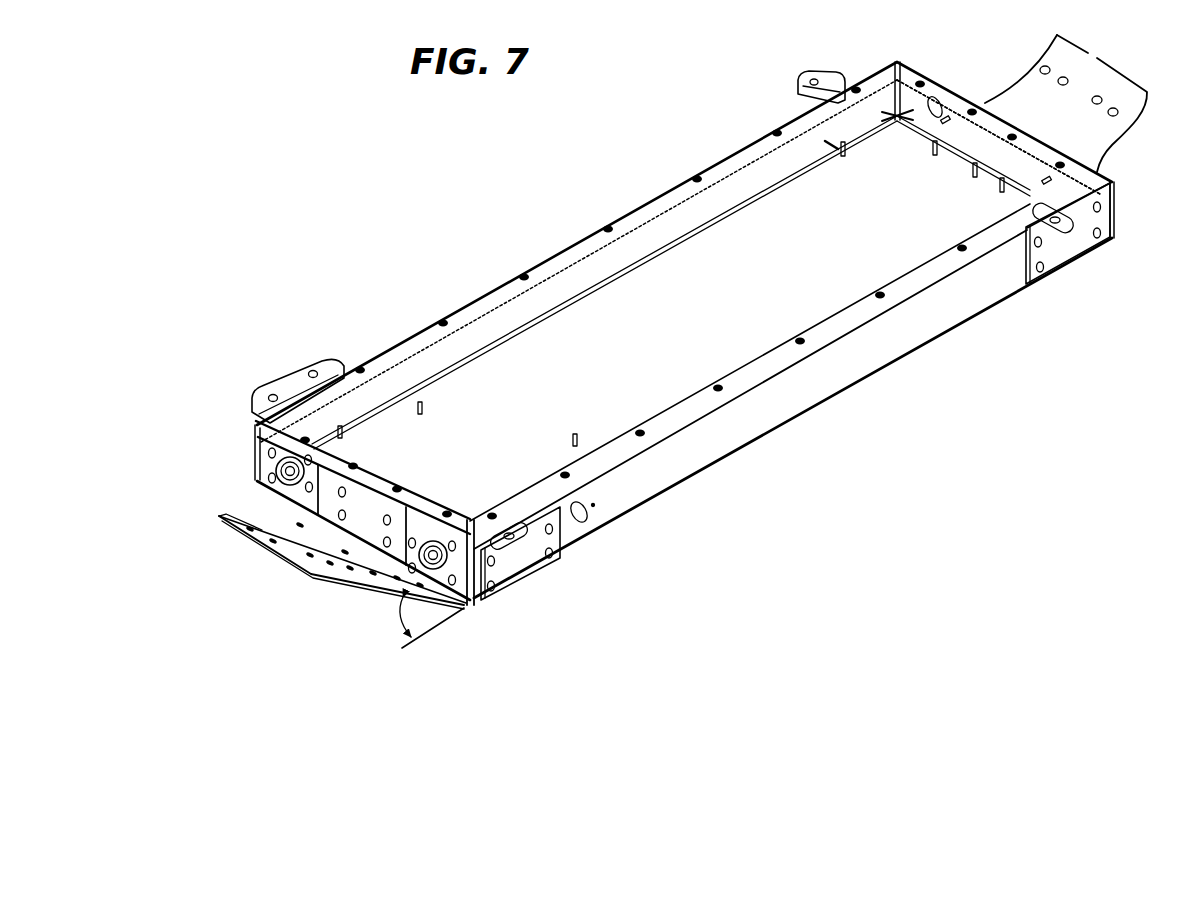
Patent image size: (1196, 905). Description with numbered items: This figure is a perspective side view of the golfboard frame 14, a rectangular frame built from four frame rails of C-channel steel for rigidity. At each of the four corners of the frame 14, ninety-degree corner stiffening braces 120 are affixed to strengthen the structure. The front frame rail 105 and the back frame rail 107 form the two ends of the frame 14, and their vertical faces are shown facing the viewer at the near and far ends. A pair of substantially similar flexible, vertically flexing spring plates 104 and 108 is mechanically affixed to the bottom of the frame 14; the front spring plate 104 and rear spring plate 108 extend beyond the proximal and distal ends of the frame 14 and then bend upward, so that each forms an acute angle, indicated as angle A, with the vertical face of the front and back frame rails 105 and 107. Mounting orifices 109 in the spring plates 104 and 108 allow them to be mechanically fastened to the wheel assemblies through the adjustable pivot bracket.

The frame 14 is at (757, 413).
The front spring plate 104 is at (343, 562).
The front frame rail 105 is at (363, 503).
The back frame rail 107 is at (963, 133).
The rear spring plate 108 is at (1030, 92).
The mounting orifices 109 is at (268, 530).
The corner stiffening braces 120 is at (1068, 242).
The angle A is at (424, 622).